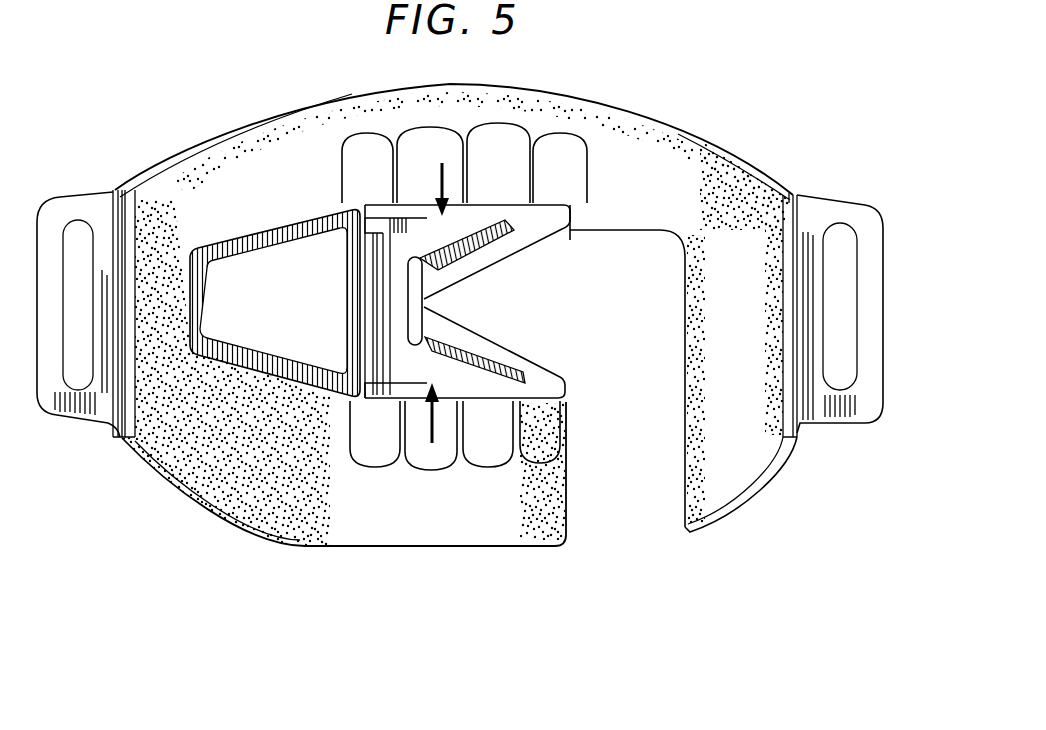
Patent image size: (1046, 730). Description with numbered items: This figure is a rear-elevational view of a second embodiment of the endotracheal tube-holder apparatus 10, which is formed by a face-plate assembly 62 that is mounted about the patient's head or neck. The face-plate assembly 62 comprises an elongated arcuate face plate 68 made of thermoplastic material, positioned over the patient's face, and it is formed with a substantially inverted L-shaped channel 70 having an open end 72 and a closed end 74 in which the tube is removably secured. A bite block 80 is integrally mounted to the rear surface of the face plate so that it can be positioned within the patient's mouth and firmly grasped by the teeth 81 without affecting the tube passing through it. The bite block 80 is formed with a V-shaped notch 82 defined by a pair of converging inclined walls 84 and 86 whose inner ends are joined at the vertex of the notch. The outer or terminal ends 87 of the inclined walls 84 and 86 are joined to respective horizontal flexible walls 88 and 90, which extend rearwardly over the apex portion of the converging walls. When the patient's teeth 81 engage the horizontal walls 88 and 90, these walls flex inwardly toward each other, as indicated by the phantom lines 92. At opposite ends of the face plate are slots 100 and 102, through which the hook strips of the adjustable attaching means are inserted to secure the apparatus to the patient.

The endotracheal tube-holder apparatus 10 is at (703, 125).
The face-plate assembly 62 is at (777, 477).
The face plate 68 is at (760, 167).
The inverted L-shaped channel 70 is at (641, 311).
The open end 72 is at (568, 487).
The closed end 74 is at (430, 302).
The bite block 80 is at (398, 298).
The teeth 81 is at (560, 133).
The V-shaped notch 82 is at (495, 331).
The inclined wall 84 is at (527, 252).
The inclined wall 86 is at (548, 363).
The terminal ends 87 is at (577, 208).
The horizontal flexible wall 88 is at (383, 205).
The horizontal flexible wall 90 is at (383, 390).
The phantom lines 92 is at (540, 207).
The slot 100 is at (850, 240).
The slot 102 is at (70, 236).